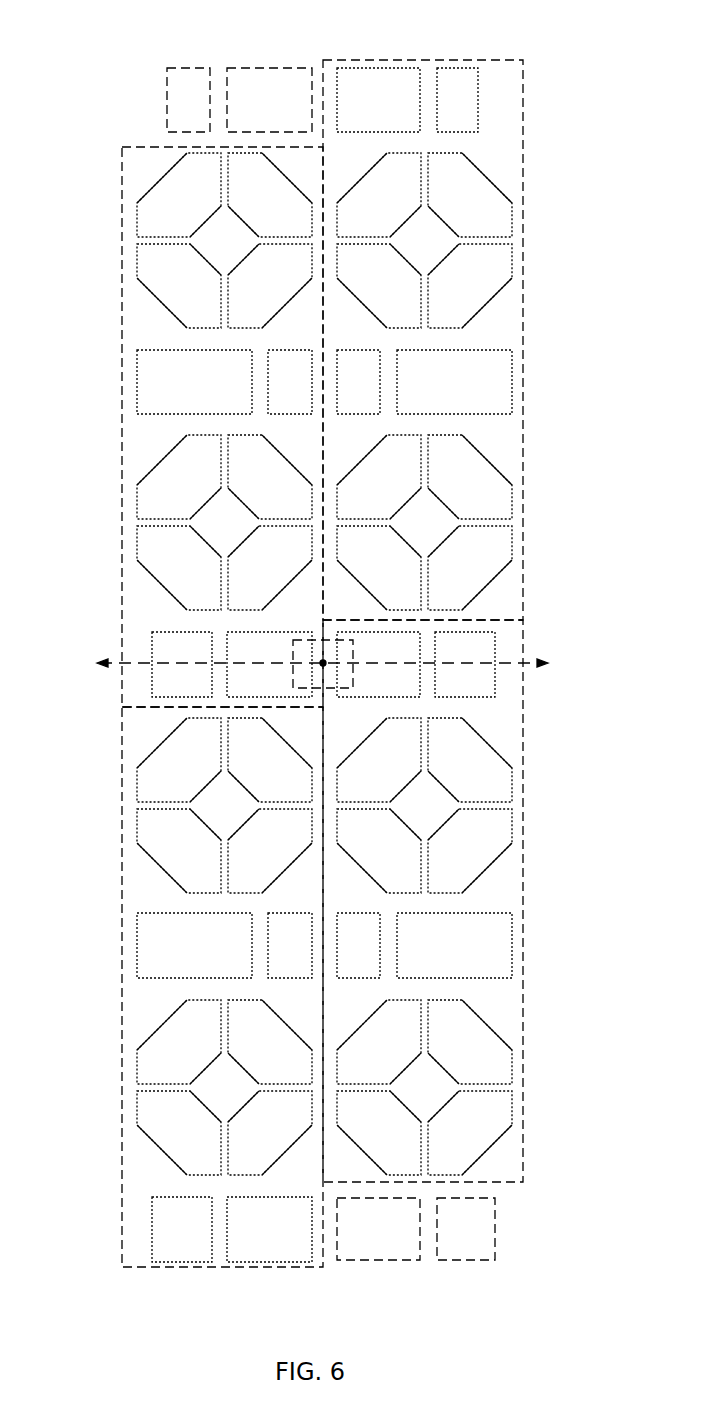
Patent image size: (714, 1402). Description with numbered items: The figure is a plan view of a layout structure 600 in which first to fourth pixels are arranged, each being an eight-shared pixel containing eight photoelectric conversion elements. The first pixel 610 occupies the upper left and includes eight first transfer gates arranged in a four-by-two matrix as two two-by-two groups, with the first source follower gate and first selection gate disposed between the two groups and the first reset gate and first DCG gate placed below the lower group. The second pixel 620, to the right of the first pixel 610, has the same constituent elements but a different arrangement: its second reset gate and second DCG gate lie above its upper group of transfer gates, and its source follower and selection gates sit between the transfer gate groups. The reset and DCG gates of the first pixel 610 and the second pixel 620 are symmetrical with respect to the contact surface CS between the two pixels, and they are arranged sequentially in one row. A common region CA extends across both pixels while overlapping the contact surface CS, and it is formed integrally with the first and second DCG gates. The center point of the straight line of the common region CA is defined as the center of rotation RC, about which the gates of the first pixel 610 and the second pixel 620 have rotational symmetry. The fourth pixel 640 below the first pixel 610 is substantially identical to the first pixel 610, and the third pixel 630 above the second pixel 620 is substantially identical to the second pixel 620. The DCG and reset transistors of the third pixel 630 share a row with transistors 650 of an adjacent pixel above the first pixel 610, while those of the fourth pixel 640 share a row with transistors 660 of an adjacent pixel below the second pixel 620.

The layout structure 600 is at (527, 30).
The first pixel 610 is at (122, 434).
The second pixel 620 is at (523, 873).
The third pixel 630 is at (523, 311).
The fourth pixel 640 is at (122, 998).
The transistors of adjacent pixel 650 is at (190, 68).
The transistors of adjacent pixel 660 is at (378, 1262).
The contact surface CS is at (323, 698).
The center of rotation RC is at (320, 658).
The common region CA is at (353, 688).